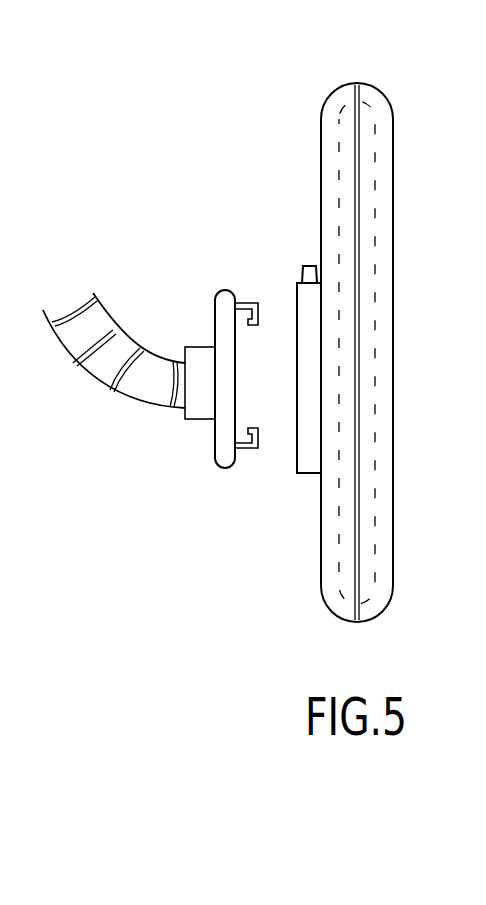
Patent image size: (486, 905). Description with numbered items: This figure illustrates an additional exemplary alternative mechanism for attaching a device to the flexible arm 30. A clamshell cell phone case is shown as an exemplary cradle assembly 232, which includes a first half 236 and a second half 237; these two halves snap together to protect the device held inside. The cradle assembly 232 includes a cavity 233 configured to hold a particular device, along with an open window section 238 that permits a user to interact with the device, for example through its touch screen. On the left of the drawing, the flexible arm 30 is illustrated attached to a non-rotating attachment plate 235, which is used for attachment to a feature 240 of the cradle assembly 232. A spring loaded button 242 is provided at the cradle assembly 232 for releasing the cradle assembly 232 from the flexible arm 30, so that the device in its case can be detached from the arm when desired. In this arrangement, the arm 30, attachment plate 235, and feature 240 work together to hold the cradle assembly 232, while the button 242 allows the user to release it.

The flexible arm 30 is at (102, 365).
The cradle assembly 232 is at (383, 606).
The cavity 233 is at (365, 303).
The non-rotating attachment plate 235 is at (213, 449).
The first half 236 is at (332, 88).
The second half 237 is at (378, 90).
The open window section 238 is at (385, 203).
The feature 240 is at (295, 464).
The spring loaded button 242 is at (302, 265).